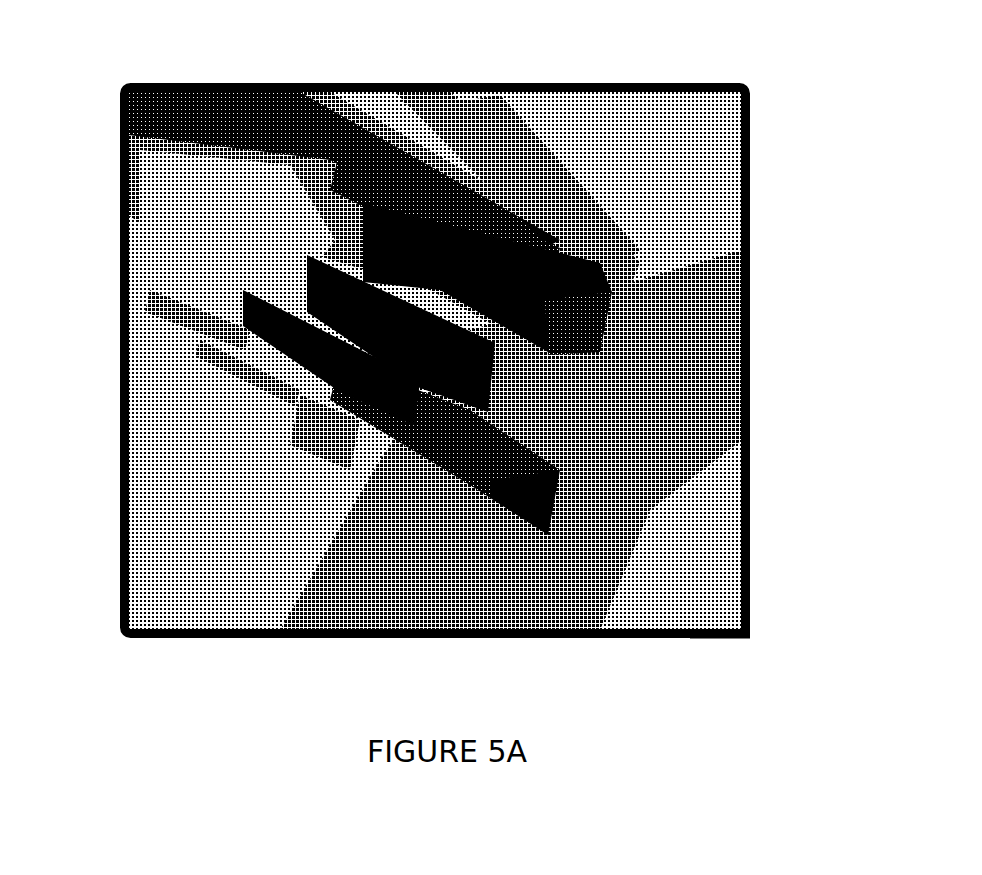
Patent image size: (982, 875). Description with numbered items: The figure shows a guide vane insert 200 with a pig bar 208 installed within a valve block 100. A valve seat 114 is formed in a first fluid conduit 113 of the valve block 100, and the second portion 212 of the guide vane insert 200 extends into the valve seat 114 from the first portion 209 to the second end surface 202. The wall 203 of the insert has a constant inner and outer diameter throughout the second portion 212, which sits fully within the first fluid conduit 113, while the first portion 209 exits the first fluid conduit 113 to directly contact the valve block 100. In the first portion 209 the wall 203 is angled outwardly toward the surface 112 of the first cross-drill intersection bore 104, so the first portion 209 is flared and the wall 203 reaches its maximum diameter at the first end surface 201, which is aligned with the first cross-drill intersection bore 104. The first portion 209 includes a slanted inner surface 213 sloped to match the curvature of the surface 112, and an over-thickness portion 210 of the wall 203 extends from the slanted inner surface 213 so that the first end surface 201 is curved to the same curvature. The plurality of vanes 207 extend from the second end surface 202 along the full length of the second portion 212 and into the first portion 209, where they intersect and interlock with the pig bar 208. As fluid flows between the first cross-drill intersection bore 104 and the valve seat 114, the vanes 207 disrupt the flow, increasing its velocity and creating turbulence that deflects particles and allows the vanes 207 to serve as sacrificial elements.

The valve block 100 is at (716, 114).
The first cross-drill intersection bore 104 is at (712, 611).
The surface of the first cross-drill intersection bore 112 is at (715, 566).
The first fluid conduit 113 is at (527, 140).
The valve seat 114 is at (429, 118).
The guide vane insert 200 is at (642, 460).
The first end surface 201 is at (438, 572).
The second end surface 202 is at (396, 166).
The wall 203 is at (208, 306).
The plurality of vanes 207 is at (478, 265).
The pig bar 208 is at (574, 326).
The first portion 209 is at (321, 415).
The over-thickness portion 210 is at (594, 579).
The second portion 212 is at (231, 345).
The slanted inner surface 213 is at (508, 546).